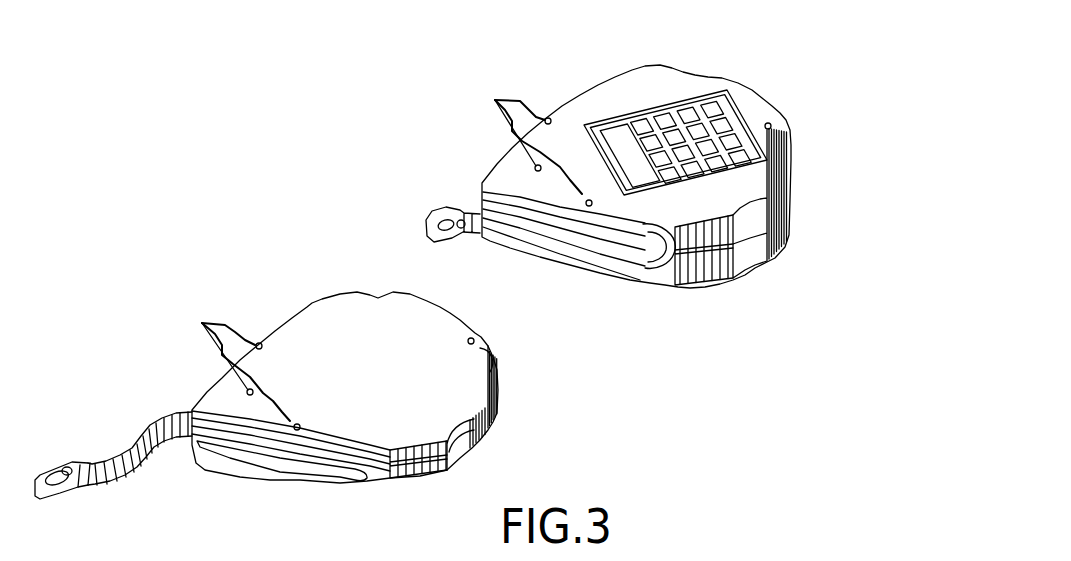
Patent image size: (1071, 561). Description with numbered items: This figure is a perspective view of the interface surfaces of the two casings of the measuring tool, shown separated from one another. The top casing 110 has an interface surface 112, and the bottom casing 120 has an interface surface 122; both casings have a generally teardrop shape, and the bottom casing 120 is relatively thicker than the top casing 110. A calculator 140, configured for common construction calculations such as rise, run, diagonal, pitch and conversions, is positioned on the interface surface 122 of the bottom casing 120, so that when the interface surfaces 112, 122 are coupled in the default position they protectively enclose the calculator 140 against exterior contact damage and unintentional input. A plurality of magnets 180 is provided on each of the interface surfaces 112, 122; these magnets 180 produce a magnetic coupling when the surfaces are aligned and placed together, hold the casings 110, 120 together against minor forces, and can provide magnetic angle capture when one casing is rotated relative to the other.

The top casing 110 is at (527, 432).
The interface surface 112 is at (478, 357).
The bottom casing 120 is at (800, 250).
The interface surface 122 is at (647, 212).
The calculator 140 is at (712, 108).
The magnets 180 is at (800, 100).